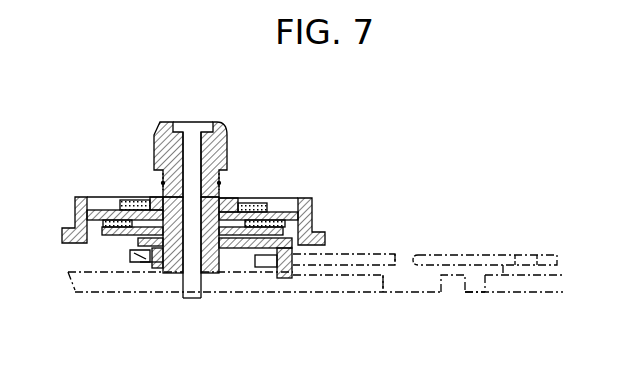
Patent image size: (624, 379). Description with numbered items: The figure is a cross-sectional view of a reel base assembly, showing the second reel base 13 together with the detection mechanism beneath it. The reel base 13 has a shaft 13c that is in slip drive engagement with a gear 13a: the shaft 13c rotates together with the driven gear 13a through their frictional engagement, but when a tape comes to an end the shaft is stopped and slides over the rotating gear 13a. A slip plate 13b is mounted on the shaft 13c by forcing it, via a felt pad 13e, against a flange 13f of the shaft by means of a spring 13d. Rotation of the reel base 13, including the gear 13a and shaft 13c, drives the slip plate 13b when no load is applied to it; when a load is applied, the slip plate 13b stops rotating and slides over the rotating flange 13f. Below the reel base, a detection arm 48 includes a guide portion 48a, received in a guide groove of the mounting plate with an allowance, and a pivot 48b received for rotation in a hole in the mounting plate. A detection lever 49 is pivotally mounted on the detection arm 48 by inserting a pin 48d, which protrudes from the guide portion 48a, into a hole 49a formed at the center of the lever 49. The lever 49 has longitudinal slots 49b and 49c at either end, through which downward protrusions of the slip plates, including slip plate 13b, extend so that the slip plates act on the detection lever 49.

The second reel base 13 is at (233, 198).
The gear 13a is at (313, 231).
The slip plate 13b is at (250, 268).
The shaft 13c is at (229, 133).
The spring 13d is at (152, 263).
The felt pad 13e is at (120, 254).
The flange 13f is at (103, 241).
The detection arm 48 is at (418, 280).
The guide portion 48a is at (391, 288).
The pivot 48b is at (473, 290).
The pin 48d is at (405, 257).
The detection lever 49 is at (492, 256).
The hole 49a is at (418, 253).
The longitudinal slot 49b is at (527, 257).
The longitudinal slot 49c is at (295, 279).